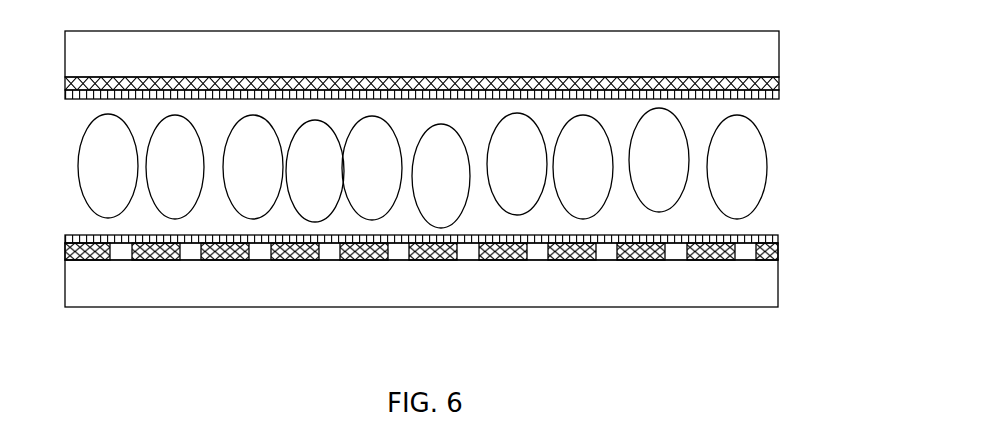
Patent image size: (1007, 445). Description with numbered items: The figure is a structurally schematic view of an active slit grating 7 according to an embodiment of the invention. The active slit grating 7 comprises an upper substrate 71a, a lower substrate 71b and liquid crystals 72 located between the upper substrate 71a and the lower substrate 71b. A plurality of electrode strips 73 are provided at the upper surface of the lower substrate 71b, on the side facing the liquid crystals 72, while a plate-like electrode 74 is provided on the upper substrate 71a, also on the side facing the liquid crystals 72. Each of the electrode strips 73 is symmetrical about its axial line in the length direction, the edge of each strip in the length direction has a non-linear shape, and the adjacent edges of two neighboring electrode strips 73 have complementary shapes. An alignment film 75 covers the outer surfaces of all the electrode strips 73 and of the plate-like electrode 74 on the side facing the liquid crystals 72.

The active slit grating 7 is at (62, 150).
The upper substrate 71a is at (775, 57).
The lower substrate 71b is at (765, 290).
The liquid crystals 72 is at (767, 165).
The electrode strips 73 is at (778, 256).
The plate-like electrode 74 is at (779, 83).
The alignment film 75 is at (779, 97).